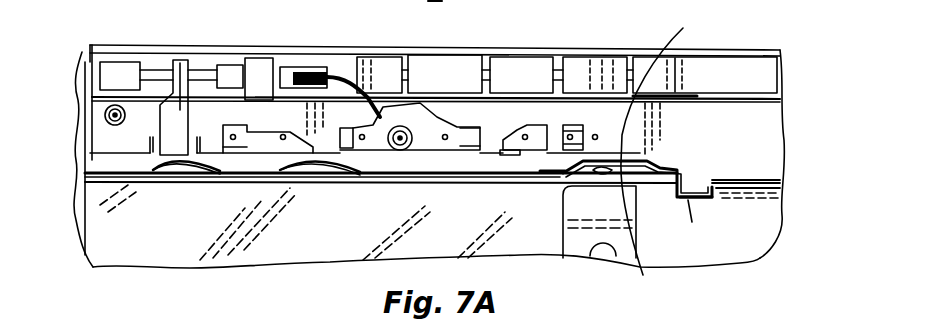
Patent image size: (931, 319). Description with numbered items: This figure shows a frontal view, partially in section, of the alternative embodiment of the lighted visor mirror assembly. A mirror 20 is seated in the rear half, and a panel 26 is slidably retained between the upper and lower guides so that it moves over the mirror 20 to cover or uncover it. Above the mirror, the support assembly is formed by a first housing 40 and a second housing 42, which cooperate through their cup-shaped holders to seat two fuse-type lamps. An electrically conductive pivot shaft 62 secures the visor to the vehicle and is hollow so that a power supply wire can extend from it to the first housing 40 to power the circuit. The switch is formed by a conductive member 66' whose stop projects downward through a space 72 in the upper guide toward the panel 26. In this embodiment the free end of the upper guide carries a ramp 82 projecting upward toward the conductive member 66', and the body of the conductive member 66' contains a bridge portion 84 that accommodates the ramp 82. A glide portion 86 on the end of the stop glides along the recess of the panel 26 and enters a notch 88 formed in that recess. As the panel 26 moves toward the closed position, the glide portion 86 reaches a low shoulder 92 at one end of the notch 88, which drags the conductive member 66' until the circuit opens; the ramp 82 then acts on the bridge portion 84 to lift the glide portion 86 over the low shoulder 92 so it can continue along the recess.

The mirror 20 is at (108, 237).
The panel 26 is at (580, 243).
The first housing 40 is at (440, 123).
The second housing 42 is at (522, 130).
The pivot shaft 62 is at (300, 72).
The conductive member 66' is at (598, 91).
The space 72 is at (693, 180).
The ramp 82 is at (644, 234).
The bridge portion 84 is at (672, 85).
The glide portion 86 is at (710, 203).
The notch 88 is at (690, 205).
The low shoulder 92 is at (717, 190).